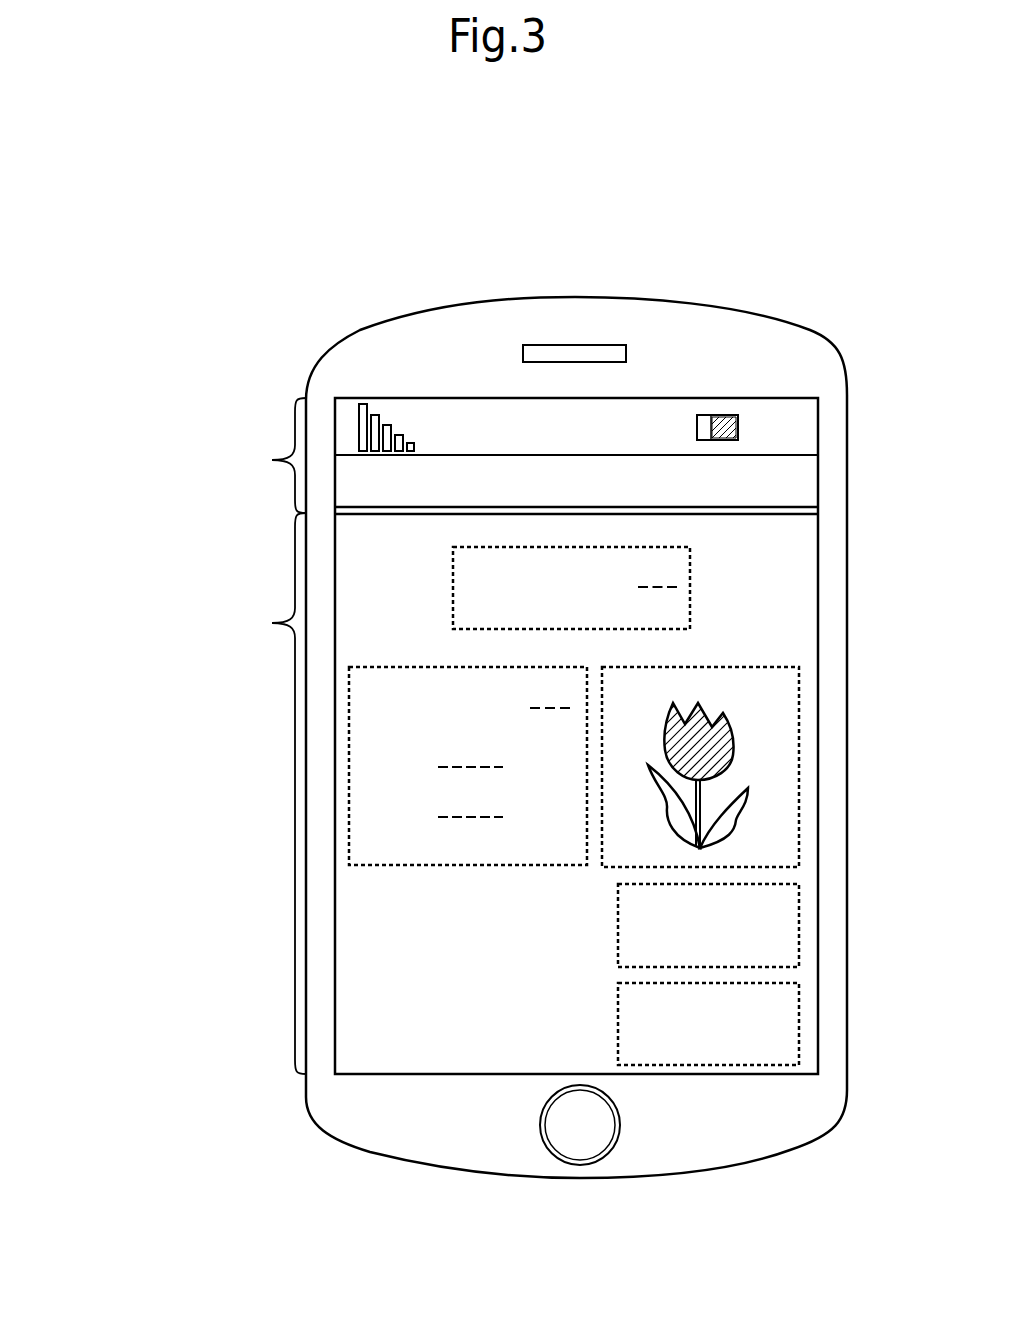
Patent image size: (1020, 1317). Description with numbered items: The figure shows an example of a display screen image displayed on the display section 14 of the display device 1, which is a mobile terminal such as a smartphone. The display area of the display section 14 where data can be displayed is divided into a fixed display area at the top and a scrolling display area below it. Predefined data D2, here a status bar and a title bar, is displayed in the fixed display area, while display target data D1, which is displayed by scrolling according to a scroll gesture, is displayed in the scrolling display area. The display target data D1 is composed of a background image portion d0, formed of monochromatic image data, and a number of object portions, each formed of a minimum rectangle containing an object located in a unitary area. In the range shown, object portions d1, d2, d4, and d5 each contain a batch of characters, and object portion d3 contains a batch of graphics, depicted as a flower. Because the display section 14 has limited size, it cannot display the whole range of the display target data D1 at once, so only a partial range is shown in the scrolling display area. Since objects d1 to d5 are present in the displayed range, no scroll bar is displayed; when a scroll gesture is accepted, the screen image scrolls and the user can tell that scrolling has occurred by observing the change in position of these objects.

The display device 1 is at (803, 300).
The display section 14 is at (818, 398).
The predefined data D2 is at (805, 480).
The display target data D1 is at (805, 558).
The background image portion d0 is at (793, 643).
The object portion d1 is at (690, 598).
The object portion d2 is at (349, 778).
The object portion d3 is at (799, 775).
The object portion d4 is at (799, 938).
The object portion d5 is at (799, 1033).